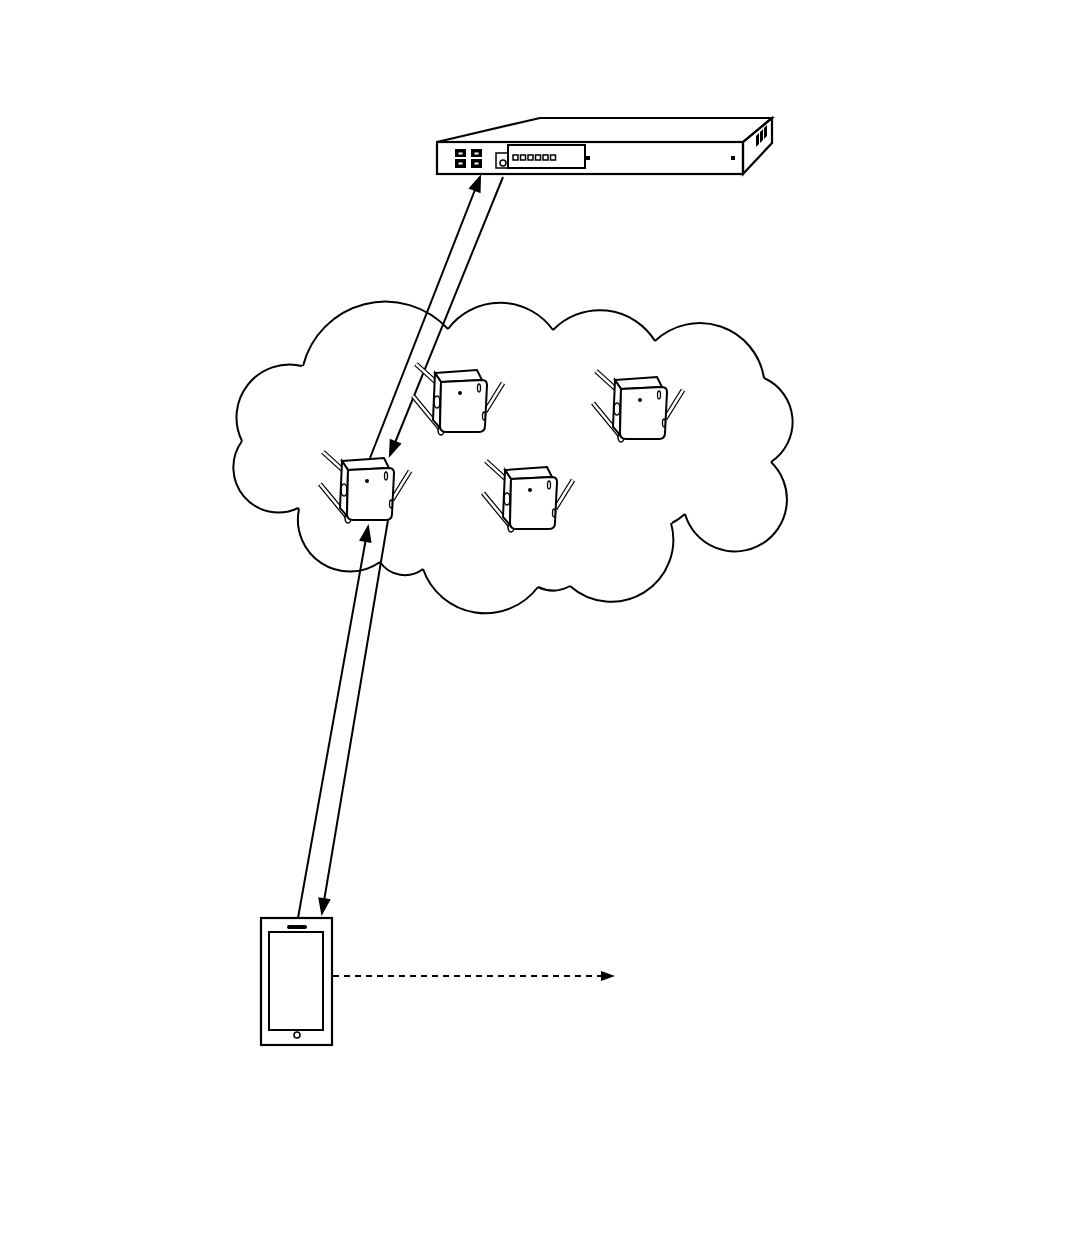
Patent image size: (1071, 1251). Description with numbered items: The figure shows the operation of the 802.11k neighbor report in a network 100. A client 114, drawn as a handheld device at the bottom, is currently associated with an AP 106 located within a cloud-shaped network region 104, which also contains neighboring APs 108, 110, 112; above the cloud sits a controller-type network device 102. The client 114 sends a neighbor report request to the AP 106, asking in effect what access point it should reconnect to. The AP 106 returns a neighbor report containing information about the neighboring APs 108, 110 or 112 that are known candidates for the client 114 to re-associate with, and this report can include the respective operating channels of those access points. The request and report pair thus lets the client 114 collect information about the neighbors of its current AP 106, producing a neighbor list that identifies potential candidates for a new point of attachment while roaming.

The network 100 is at (768, 38).
The wireless LAN controller 102 is at (773, 135).
The network cloud 104 is at (795, 411).
The AP 106 is at (262, 510).
The neighboring AP 108 is at (487, 370).
The neighboring AP 110 is at (653, 372).
The neighboring AP 112 is at (558, 538).
The client 114 is at (261, 991).